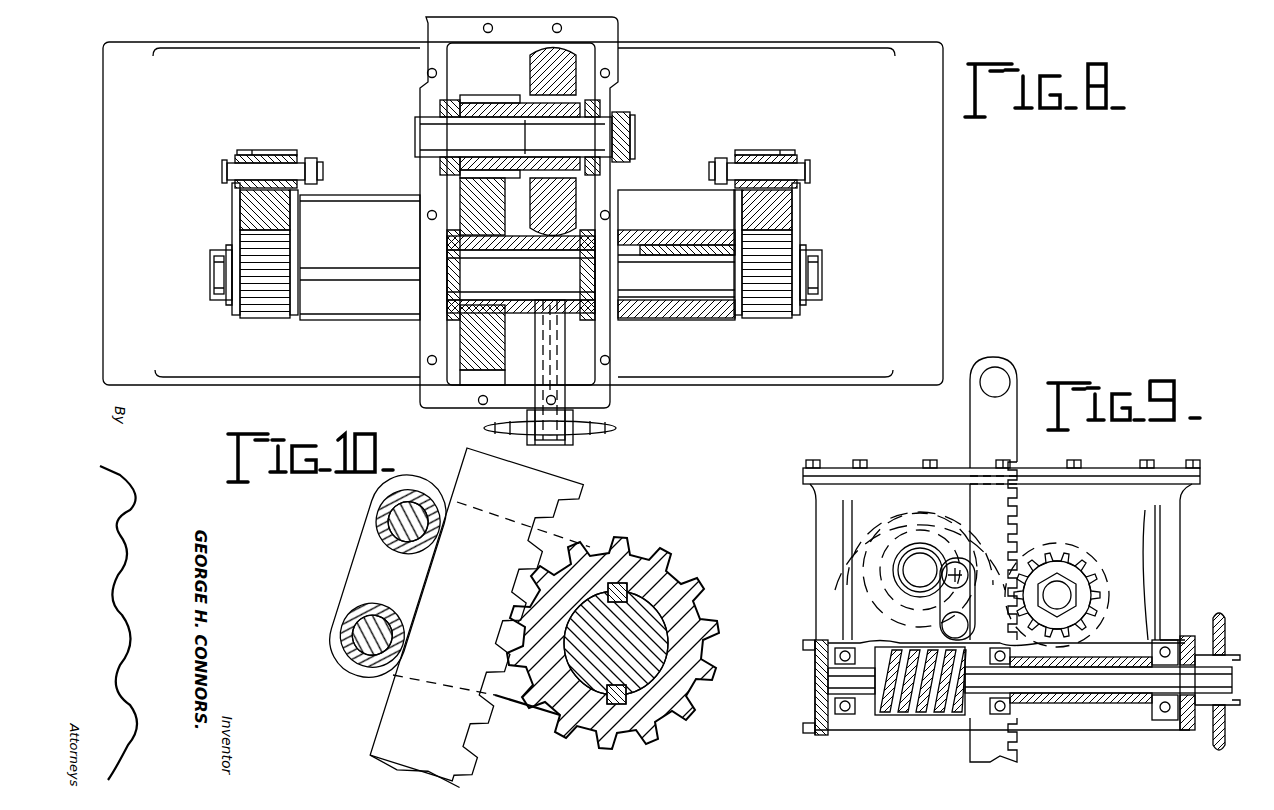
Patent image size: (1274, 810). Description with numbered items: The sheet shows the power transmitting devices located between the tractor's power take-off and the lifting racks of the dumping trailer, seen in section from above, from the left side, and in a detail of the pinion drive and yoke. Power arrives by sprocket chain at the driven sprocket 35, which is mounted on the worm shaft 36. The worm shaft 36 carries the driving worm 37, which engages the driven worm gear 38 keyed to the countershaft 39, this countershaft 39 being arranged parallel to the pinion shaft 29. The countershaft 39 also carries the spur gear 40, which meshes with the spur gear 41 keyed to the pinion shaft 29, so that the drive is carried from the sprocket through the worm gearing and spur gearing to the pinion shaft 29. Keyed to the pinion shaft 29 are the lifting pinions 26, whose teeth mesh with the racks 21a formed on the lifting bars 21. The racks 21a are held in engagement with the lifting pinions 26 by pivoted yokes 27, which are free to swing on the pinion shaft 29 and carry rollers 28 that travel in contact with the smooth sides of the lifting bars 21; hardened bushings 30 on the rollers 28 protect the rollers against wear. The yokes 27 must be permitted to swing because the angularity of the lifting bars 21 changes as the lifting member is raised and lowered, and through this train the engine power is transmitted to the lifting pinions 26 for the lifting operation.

In FIG. 8, the lifting bar 21 is at (248, 212).
In FIG. 9, the lifting bar 21 is at (978, 445).
In FIG. 10, the lifting bar 21 is at (392, 723).
In FIG. 9, the rack 21a is at (1022, 745).
In FIG. 10, the rack 21a is at (568, 520).
In FIG. 8, the lifting pinion 26 is at (265, 310).
In FIG. 9, the lifting pinion 26 is at (1070, 570).
In FIG. 10, the lifting pinion 26 is at (680, 592).
In FIG. 8, the pivoted yoke 27 is at (233, 229).
In FIG. 9, the pivoted yoke 27 is at (1020, 565).
In FIG. 10, the pivoted yoke 27 is at (568, 552).
In FIG. 8, the roller 28 is at (256, 170).
In FIG. 9, the roller 28 is at (950, 575).
In FIG. 10, the roller 28 is at (360, 622).
In FIG. 8, the pinion shaft 29 is at (210, 277).
In FIG. 9, the pinion shaft 29 is at (1060, 600).
In FIG. 10, the pinion shaft 29 is at (668, 632).
In FIG. 8, the hardened bushing 30 is at (284, 165).
In FIG. 10, the hardened bushing 30 is at (417, 498).
In FIG. 8, the driven sprocket 35 is at (590, 432).
In FIG. 9, the driven sprocket 35 is at (1222, 645).
In FIG. 8, the worm shaft 36 is at (558, 343).
In FIG. 9, the worm shaft 36 is at (1140, 685).
In FIG. 8, the driving worm 37 is at (548, 202).
In FIG. 9, the driving worm 37 is at (938, 690).
In FIG. 8, the driven worm gear 38 is at (570, 72).
In FIG. 9, the driven worm gear 38 is at (843, 585).
In FIG. 8, the countershaft 39 is at (435, 137).
In FIG. 9, the countershaft 39 is at (921, 560).
In FIG. 8, the spur gear 40 is at (492, 103).
In FIG. 9, the spur gear 40 is at (870, 556).
In FIG. 8, the spur gear 41 is at (470, 343).
In FIG. 9, the spur gear 41 is at (1160, 590).